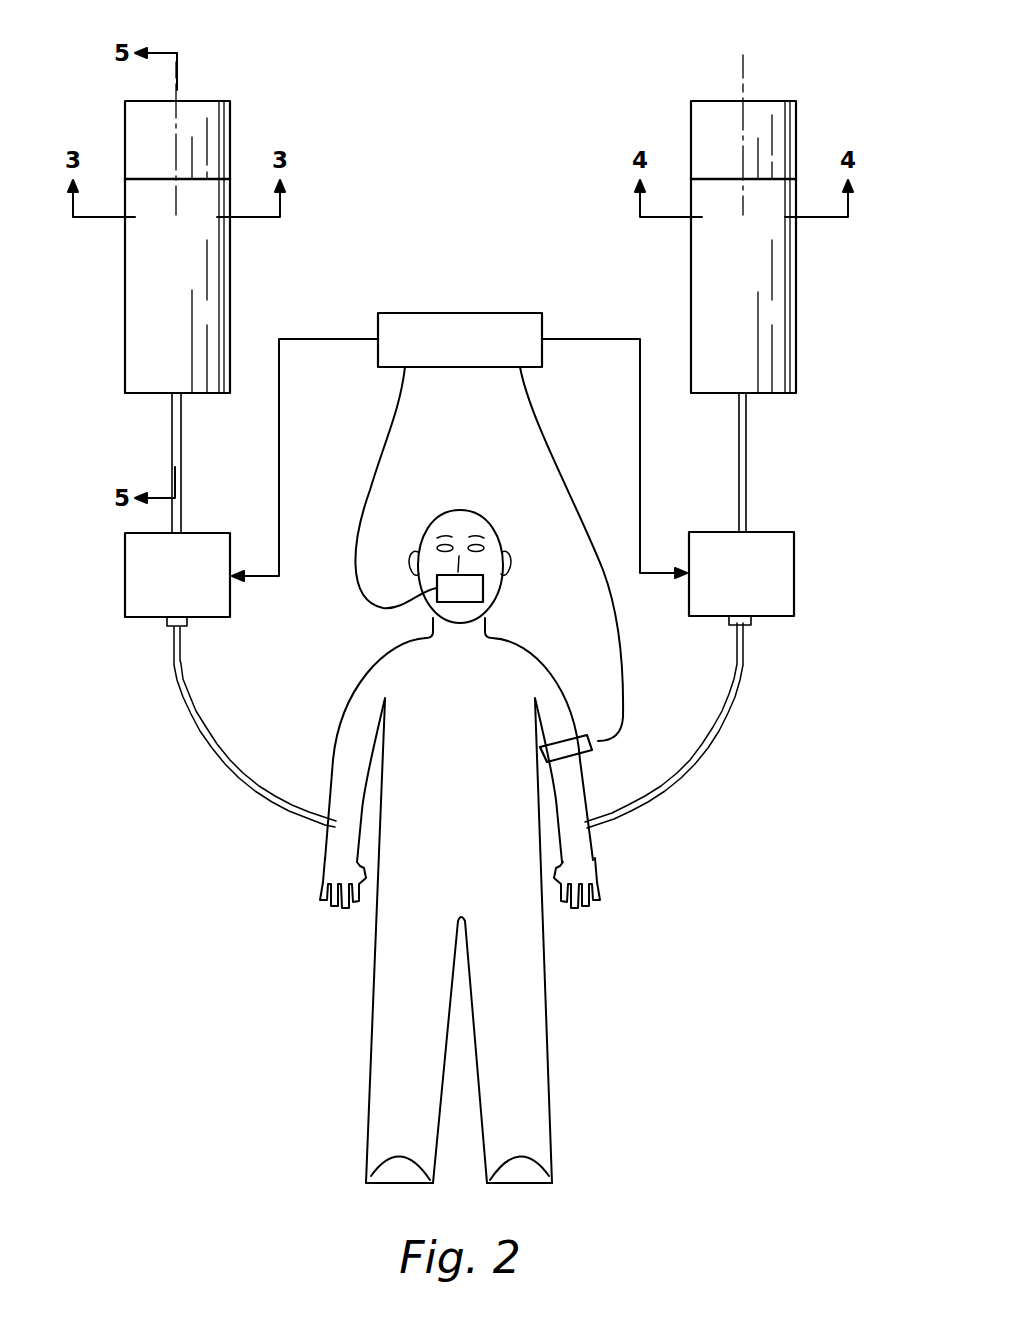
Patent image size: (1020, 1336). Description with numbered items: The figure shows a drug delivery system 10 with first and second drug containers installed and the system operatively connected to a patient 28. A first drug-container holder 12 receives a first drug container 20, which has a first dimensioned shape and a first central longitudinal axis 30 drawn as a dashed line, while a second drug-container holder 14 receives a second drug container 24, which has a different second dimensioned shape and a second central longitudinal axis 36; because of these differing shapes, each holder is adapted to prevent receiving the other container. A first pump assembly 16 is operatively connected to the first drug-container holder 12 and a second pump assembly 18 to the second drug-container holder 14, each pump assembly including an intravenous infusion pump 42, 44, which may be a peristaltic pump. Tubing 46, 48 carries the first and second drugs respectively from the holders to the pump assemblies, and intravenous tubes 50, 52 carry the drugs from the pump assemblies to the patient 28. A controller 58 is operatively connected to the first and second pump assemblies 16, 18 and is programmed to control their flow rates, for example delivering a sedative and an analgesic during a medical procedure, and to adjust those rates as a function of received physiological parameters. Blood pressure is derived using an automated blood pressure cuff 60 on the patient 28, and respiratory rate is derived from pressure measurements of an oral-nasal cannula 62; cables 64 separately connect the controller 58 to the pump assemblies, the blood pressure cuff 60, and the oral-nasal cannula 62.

The drug delivery system 10 is at (532, 58).
The first drug-container holder 12 is at (157, 290).
The second drug-container holder 14 is at (765, 290).
The first pump assembly 16 is at (121, 634).
The second pump assembly 18 is at (798, 634).
The first drug container 20 is at (145, 133).
The second drug container 24 is at (775, 135).
The patient 28 is at (447, 800).
The first central longitudinal axis 30 is at (178, 90).
The second central longitudinal axis 36 is at (743, 82).
The intravenous infusion pump 42 is at (138, 575).
The intravenous infusion pump 44 is at (780, 573).
The tubing 46 is at (172, 433).
The tubing 48 is at (746, 433).
The intravenous tube 50 is at (224, 762).
The intravenous tube 52 is at (694, 754).
The controller 58 is at (478, 313).
The automated blood pressure cuff 60 is at (568, 762).
The oral-nasal cannula 62 is at (470, 587).
The cables 64 is at (279, 423).